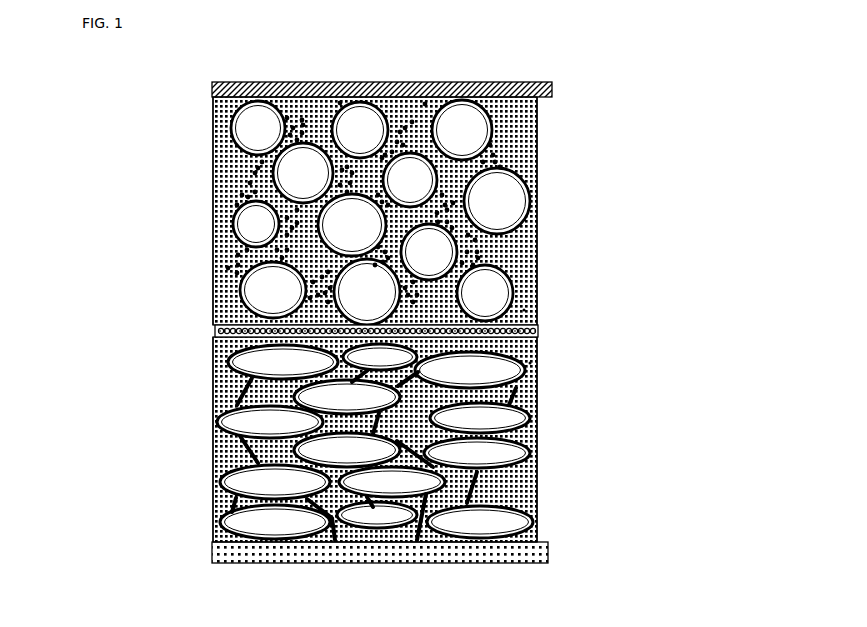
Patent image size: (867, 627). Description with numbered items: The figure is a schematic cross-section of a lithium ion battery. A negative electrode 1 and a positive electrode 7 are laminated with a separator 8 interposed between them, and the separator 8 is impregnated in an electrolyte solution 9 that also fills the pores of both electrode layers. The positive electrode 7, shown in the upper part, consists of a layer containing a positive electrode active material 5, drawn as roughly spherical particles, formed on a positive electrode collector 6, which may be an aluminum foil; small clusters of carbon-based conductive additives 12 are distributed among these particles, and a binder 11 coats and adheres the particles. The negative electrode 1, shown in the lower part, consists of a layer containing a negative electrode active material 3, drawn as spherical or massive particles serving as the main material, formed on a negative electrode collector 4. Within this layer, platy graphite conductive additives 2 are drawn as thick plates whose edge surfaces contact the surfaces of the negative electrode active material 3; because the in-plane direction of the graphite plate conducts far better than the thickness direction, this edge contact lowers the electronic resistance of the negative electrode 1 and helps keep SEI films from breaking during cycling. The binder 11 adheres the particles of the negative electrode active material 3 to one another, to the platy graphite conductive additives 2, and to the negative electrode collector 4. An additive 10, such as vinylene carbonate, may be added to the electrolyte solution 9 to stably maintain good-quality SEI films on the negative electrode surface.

The negative electrode 1 is at (212, 560).
The platy graphite conductive additives 2 is at (516, 391).
The negative electrode active material 3 is at (510, 452).
The negative electrode collector 4 is at (530, 548).
The positive electrode active material 5 is at (503, 195).
The positive electrode collector 6 is at (360, 82).
The positive electrode 7 is at (210, 324).
The separator 8 is at (212, 332).
The electrolyte solution 9 is at (530, 345).
The additive 10 is at (530, 362).
The binder 11 is at (528, 510).
The carbon-based conductive additives 12 is at (478, 253).